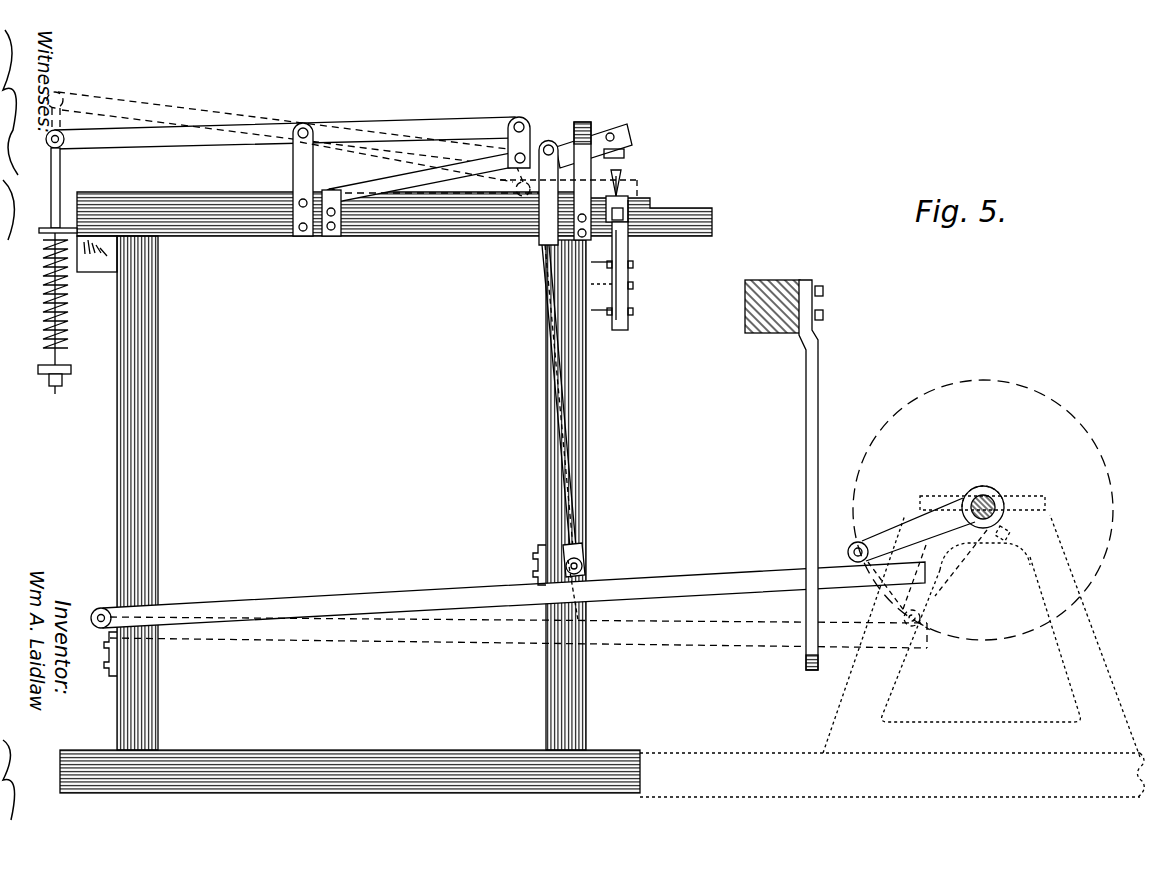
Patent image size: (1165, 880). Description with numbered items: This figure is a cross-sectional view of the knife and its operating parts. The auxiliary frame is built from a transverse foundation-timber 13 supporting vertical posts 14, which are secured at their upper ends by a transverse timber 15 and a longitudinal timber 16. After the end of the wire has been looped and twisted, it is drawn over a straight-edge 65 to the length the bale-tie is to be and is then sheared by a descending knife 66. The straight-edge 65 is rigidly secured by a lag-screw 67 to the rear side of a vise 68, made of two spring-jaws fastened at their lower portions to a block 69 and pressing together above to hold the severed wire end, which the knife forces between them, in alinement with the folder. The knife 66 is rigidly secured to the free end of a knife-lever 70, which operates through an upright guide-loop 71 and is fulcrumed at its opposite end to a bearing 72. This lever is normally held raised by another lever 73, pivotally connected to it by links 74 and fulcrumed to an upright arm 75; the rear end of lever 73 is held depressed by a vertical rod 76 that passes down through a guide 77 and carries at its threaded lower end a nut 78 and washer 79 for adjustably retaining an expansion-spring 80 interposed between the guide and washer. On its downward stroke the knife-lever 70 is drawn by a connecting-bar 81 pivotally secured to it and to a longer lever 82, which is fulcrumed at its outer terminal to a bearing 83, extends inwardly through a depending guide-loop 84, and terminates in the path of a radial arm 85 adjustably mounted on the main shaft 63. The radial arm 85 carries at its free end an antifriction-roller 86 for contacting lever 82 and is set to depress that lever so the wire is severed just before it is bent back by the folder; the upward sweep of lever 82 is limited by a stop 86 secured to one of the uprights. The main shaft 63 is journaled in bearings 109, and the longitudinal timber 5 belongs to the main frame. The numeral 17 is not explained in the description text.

The longitudinal timber 5 is at (782, 282).
The transverse foundation-timber 13 is at (358, 752).
The vertical post 14 is at (158, 519).
The transverse timber 15 is at (252, 238).
The longitudinal timber 16 is at (100, 268).
The needle 17 is at (629, 176).
The main shaft 63 is at (985, 500).
The straight-edge 65 is at (638, 194).
The knife 66 is at (626, 150).
The lag-screw 67 is at (630, 214).
The vise 68 is at (626, 182).
The block 69 is at (624, 306).
The knife-lever 70 is at (563, 140).
The upright guide-loop 71 is at (586, 124).
The bearing 72 is at (332, 238).
The lever 73 is at (383, 134).
The link 74 is at (526, 120).
The upright arm 75 is at (293, 166).
The vertical rod 76 is at (62, 175).
The guide 77 is at (45, 228).
The nut 78 is at (55, 394).
The washer 79 is at (40, 374).
The expansion-spring 80 is at (43, 310).
The connecting-bar 81 is at (556, 396).
The lever 82 is at (447, 597).
The bearing 83 is at (108, 648).
The depending guide-loop 84 is at (805, 550).
The radial arm 85 is at (905, 538).
The antifriction-roller 86 is at (536, 588).
The bearing 109 is at (965, 494).